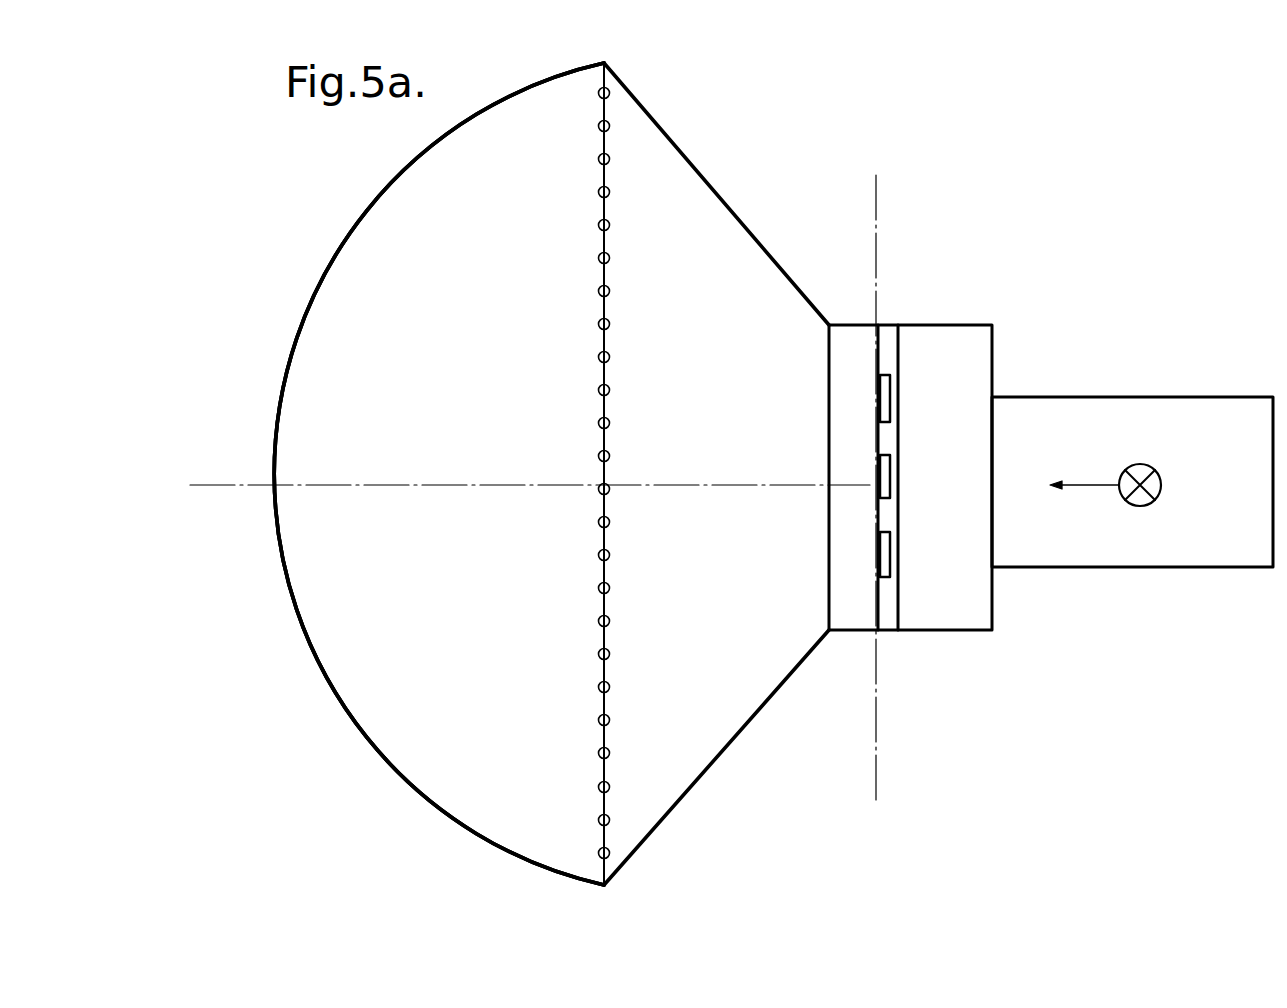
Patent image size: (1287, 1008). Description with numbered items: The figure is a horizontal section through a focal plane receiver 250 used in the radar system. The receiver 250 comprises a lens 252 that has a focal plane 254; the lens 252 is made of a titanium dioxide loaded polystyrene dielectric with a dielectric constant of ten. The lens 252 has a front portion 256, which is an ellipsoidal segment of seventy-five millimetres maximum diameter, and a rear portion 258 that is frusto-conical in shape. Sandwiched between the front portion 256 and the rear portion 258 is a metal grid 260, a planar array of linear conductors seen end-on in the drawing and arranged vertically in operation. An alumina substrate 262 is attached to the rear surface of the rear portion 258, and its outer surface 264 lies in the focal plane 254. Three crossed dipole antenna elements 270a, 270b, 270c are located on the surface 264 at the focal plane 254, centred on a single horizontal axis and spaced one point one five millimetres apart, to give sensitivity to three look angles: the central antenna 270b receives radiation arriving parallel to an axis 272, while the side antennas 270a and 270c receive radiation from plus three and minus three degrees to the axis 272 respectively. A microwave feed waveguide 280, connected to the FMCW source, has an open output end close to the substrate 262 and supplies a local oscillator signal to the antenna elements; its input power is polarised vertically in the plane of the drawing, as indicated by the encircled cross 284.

The focal plane receiver 250 is at (348, 182).
The lens 252 is at (388, 758).
The focal plane 254 is at (877, 740).
The front portion 256 is at (282, 396).
The rear portion 258 is at (714, 708).
The metal grid 260 is at (598, 790).
The alumina substrate 262 is at (848, 324).
The outer surface 264 is at (882, 613).
The side antenna element 270a is at (893, 390).
The central antenna element 270b is at (897, 470).
The side antenna element 270c is at (897, 565).
The axis 272 is at (227, 488).
The microwave feed waveguide 280 is at (993, 340).
The encircled cross 284 is at (1145, 506).